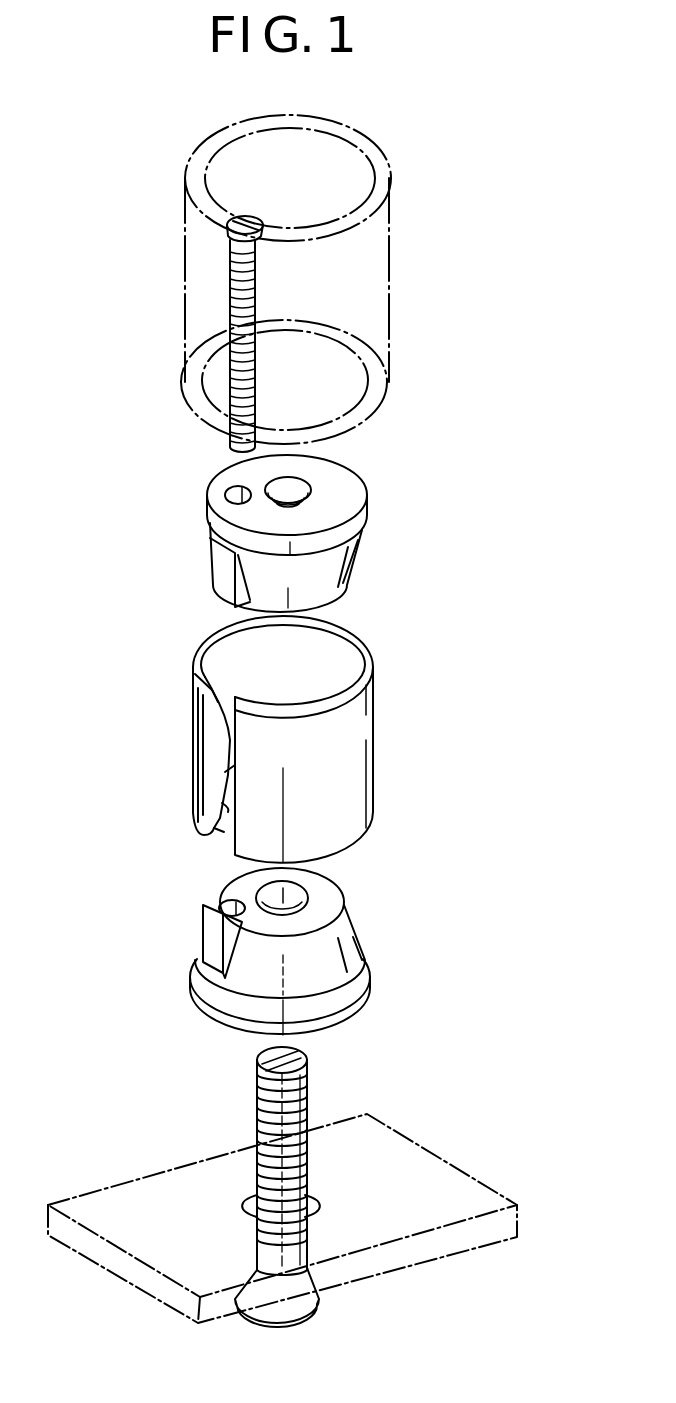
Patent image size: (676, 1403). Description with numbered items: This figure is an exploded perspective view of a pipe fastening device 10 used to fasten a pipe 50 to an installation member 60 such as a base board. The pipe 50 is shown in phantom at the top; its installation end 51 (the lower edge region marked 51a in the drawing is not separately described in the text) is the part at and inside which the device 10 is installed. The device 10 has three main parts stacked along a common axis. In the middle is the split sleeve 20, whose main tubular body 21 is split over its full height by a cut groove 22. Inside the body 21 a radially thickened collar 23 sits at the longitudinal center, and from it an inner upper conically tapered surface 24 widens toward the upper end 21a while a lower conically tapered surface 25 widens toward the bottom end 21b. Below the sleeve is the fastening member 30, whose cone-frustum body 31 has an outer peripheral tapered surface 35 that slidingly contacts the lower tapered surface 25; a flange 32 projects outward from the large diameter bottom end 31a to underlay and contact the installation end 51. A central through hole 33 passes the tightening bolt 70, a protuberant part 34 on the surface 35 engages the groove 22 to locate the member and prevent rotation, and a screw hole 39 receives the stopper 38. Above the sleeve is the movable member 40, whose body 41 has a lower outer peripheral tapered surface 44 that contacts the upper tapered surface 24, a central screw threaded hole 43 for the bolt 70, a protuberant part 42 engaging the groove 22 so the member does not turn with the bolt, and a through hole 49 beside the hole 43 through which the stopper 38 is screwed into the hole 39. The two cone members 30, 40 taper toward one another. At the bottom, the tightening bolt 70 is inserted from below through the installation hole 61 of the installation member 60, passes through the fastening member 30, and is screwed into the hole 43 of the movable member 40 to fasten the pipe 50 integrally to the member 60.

The pipe fastening device 10 is at (497, 683).
The split sleeve 20 is at (260, 743).
The main tubular body 21 is at (330, 739).
The upper end 21a is at (196, 690).
The bottom end 21b is at (365, 813).
The cut groove 22 is at (223, 836).
The collar 23 is at (220, 753).
The inner upper conically tapered surface 24 is at (222, 698).
The lower conically tapered surface 25 is at (222, 805).
The fastening member 30 is at (260, 927).
The body 31 is at (205, 965).
The large diameter bottom end 31a is at (360, 955).
The flange 32 is at (365, 985).
The through hole 33 is at (328, 883).
The protuberant part 34 is at (205, 925).
The outer peripheral tapered surface 35 is at (336, 932).
The stopper 38 is at (245, 216).
The screw hole 39 is at (225, 902).
The movable member 40 is at (310, 539).
The body 41 is at (333, 575).
The protuberant part 42 is at (220, 580).
The screw threaded hole 43 is at (292, 482).
The lower outer peripheral tapered surface 44 is at (365, 528).
The through hole 49 is at (228, 492).
The pipe 50 is at (301, 279).
The installation end 51 is at (188, 350).
The lower end of cylinder 51a is at (367, 410).
The installation member 60 is at (295, 1215).
The installation hole 61 is at (322, 1212).
The tightening bolt 70 is at (305, 1324).